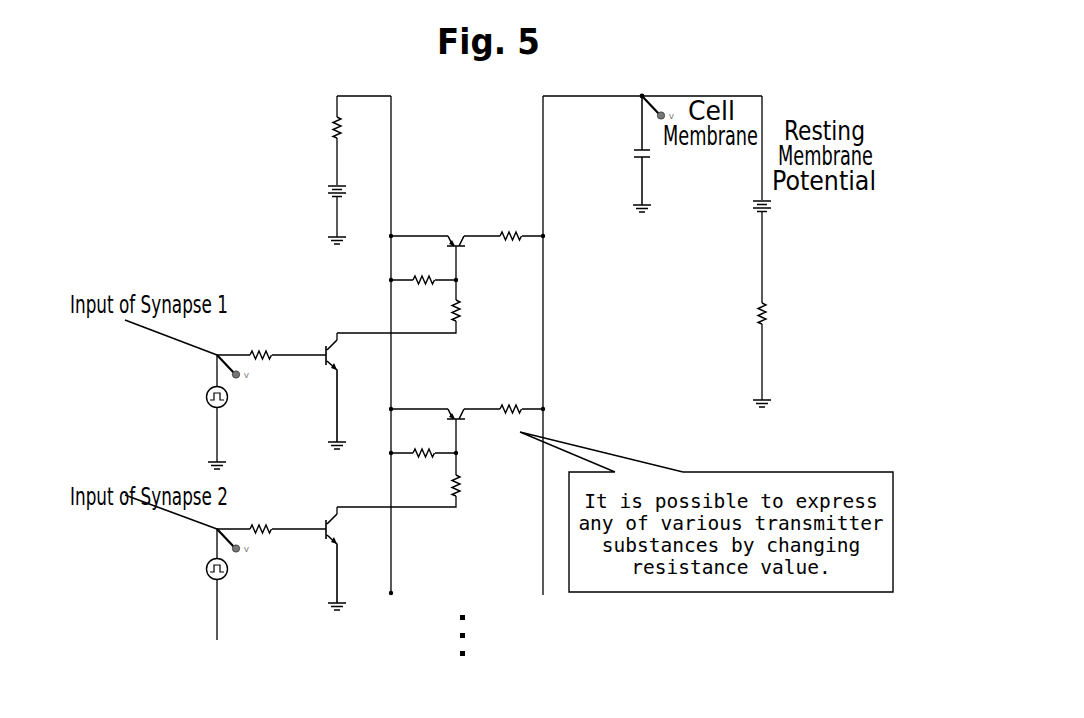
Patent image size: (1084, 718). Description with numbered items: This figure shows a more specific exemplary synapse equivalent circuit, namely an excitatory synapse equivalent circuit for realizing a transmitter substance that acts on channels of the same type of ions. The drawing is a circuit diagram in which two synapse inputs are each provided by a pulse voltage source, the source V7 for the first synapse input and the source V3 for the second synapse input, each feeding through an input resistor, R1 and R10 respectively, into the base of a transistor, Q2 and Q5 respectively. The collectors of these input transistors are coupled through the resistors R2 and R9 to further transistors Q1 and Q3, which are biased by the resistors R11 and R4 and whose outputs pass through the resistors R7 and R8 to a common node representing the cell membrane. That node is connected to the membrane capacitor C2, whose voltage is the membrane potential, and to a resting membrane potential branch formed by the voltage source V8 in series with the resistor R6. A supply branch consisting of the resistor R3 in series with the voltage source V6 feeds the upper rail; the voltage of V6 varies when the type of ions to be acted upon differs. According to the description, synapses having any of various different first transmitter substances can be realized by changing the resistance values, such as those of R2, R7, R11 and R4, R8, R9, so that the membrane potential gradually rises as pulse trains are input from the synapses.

The input resistor 1k R1 is at (262, 357).
The resistance R2 is at (473, 317).
The resistor 10 R3 is at (351, 140).
The resistance R4 is at (424, 453).
The resistor 10k R6 is at (777, 361).
The resistance R7 is at (511, 238).
The resistance R8 is at (511, 411).
The resistance R9 is at (473, 491).
The input resistor 1k R10 is at (262, 530).
The resistance R11 is at (424, 281).
The PNP transistor QPDEF Q1 is at (449, 230).
The NPN transistor QNDEF Q2 is at (326, 389).
The PNP transistor QPDEF Q3 is at (449, 404).
The NPN transistor QNDEF Q5 is at (352, 565).
The pulse voltage source synapse 2 V3 is at (200, 584).
The voltage source V6 is at (331, 209).
The pulse voltage source synapse 1 V7 is at (200, 414).
The DC voltage source 5V resting membrane potential V8 is at (778, 199).
The cell membrane capacitor 50u C2 is at (656, 160).